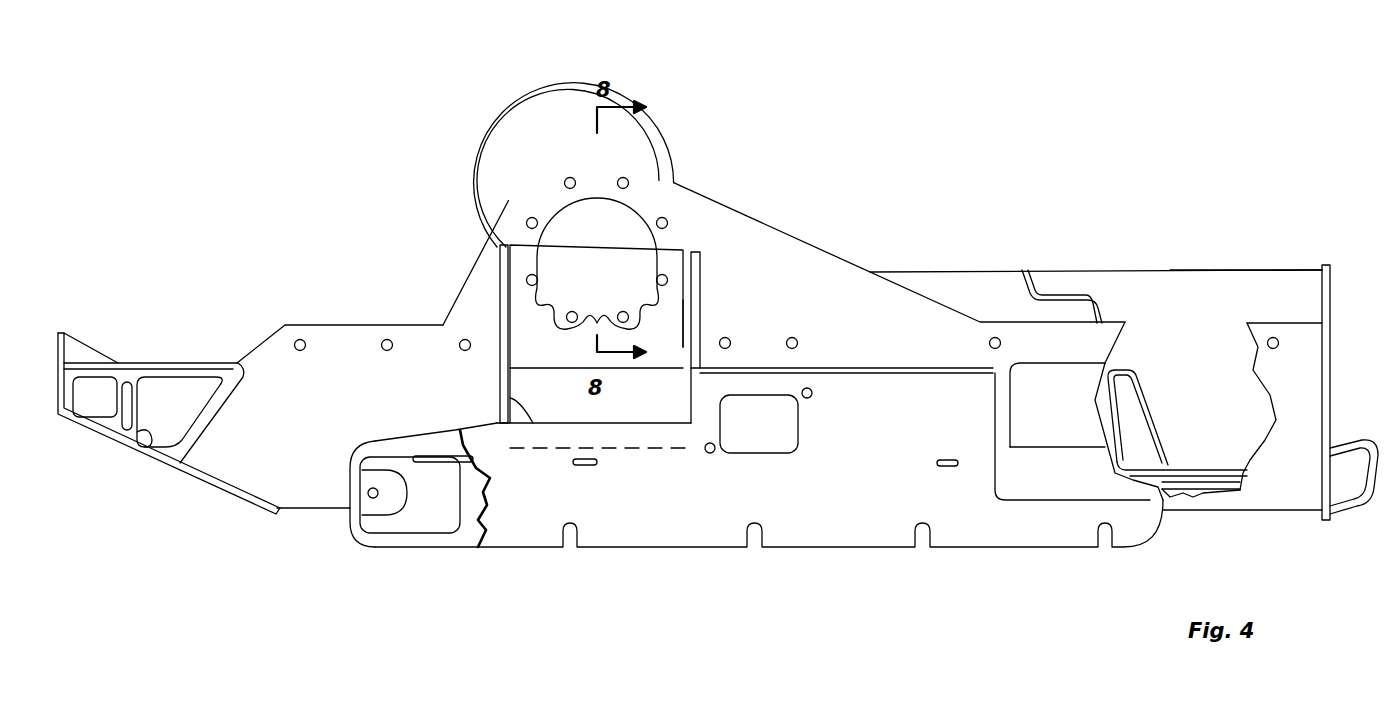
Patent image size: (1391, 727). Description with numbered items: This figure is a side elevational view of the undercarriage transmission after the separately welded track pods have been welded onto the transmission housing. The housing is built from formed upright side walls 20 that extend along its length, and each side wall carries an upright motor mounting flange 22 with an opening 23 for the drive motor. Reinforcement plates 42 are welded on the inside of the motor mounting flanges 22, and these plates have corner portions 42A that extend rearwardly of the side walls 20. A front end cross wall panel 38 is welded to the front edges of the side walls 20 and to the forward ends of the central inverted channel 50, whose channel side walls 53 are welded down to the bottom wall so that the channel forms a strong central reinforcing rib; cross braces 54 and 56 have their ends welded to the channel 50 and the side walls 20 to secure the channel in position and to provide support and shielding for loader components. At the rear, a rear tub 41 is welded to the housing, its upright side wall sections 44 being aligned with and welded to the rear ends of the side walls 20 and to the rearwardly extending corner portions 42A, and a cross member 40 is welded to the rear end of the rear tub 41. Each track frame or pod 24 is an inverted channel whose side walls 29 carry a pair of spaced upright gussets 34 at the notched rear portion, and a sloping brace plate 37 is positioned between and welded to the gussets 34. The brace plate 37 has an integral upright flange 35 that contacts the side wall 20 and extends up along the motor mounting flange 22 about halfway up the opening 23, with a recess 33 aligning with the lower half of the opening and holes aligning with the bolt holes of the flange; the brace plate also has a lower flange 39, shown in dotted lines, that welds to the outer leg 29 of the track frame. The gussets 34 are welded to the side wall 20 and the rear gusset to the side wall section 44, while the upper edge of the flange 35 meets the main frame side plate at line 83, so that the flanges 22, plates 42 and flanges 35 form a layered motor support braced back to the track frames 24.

The side wall 20 is at (880, 300).
The motor mounting flange 22 is at (651, 185).
The opening 23 is at (566, 227).
The track frame 24 is at (842, 528).
The side wall 29 is at (608, 540).
The recess 33 is at (657, 273).
The gusset 34 is at (507, 268).
The upright flange 35 is at (677, 300).
The brace plate 37 is at (558, 412).
The front end cross wall panel 38 is at (1332, 270).
The lower flange 39 is at (652, 452).
The cross member 40 is at (118, 440).
The rear tub 41 is at (331, 490).
The reinforcement plate 42 is at (586, 147).
The corner portion 42A is at (477, 305).
The upright side wall section 44 is at (345, 355).
The central inverted channel 50 is at (1135, 290).
The channel side wall 53 is at (1246, 283).
The cross brace 54 is at (1048, 300).
The cross brace 56 is at (1150, 415).
The line 83 is at (523, 238).